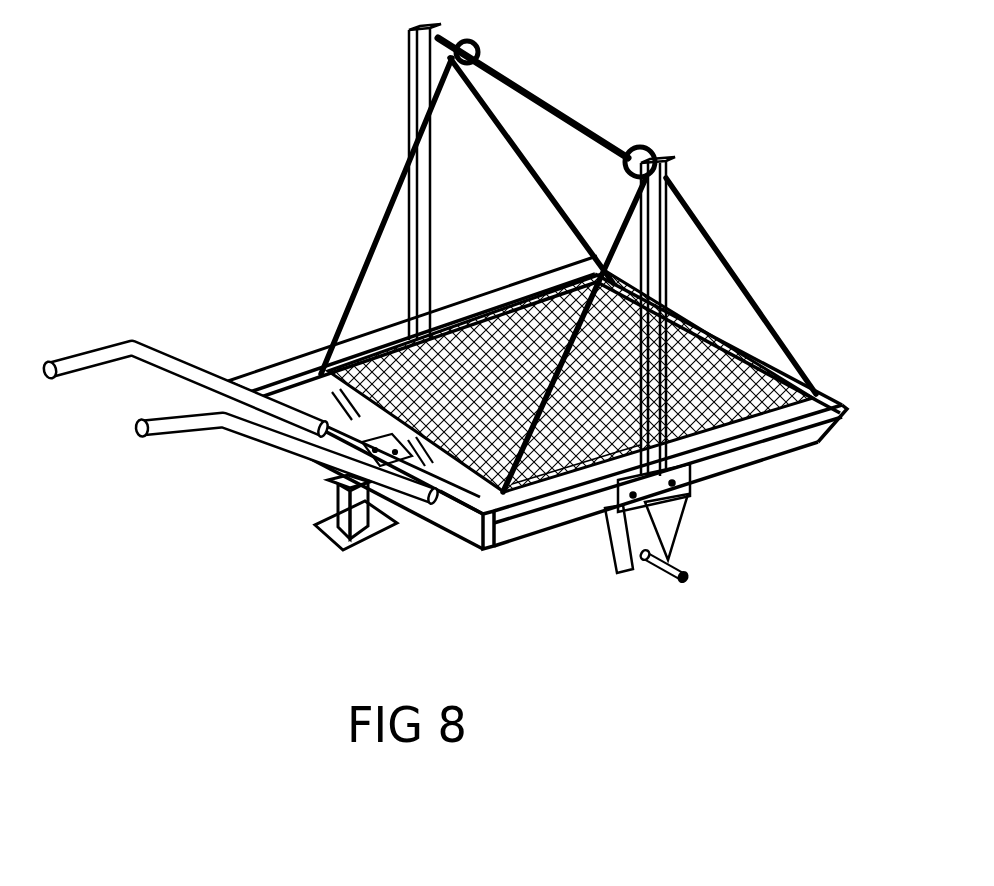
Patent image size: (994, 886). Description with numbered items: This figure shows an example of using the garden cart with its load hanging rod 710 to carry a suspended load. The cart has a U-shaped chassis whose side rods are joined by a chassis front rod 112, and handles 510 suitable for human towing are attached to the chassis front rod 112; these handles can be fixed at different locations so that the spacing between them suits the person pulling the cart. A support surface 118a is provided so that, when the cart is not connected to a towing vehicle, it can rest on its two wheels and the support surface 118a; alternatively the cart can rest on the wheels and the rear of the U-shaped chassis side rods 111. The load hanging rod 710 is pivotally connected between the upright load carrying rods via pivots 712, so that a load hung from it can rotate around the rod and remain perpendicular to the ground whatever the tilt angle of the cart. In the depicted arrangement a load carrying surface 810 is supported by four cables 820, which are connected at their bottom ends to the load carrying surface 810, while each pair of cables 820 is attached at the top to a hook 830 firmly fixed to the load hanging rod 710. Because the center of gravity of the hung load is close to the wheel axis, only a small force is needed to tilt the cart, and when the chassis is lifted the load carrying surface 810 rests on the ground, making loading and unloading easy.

The rear of the U-shaped chassis side rods 111 is at (835, 425).
The chassis front rod 112 is at (461, 528).
The support surface 118a is at (333, 540).
The handles 510 is at (177, 410).
The load hanging rod 710 is at (590, 110).
The pivots 712 is at (410, 30).
The load carrying surface 810 is at (723, 390).
The cables 820 is at (545, 197).
The hook 830 is at (477, 43).